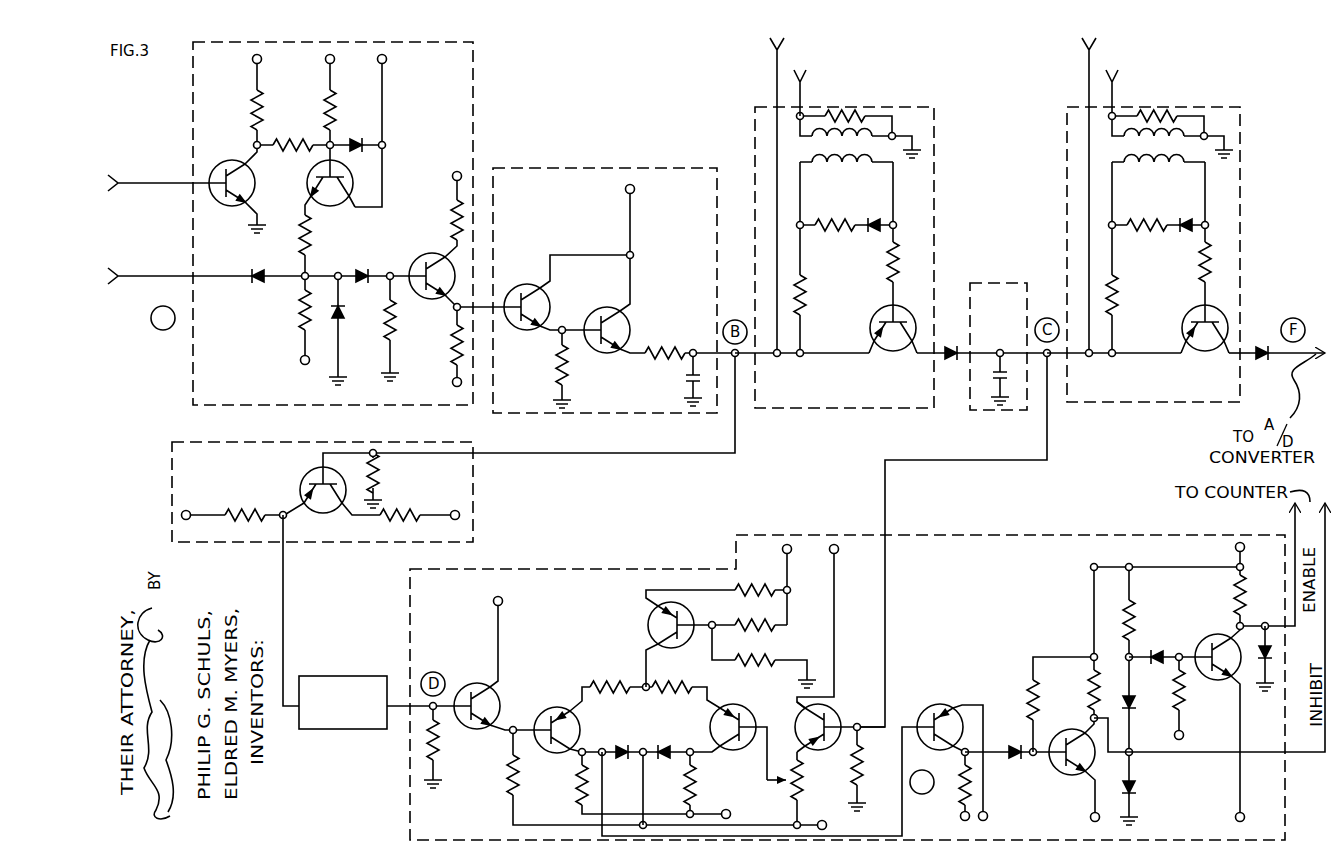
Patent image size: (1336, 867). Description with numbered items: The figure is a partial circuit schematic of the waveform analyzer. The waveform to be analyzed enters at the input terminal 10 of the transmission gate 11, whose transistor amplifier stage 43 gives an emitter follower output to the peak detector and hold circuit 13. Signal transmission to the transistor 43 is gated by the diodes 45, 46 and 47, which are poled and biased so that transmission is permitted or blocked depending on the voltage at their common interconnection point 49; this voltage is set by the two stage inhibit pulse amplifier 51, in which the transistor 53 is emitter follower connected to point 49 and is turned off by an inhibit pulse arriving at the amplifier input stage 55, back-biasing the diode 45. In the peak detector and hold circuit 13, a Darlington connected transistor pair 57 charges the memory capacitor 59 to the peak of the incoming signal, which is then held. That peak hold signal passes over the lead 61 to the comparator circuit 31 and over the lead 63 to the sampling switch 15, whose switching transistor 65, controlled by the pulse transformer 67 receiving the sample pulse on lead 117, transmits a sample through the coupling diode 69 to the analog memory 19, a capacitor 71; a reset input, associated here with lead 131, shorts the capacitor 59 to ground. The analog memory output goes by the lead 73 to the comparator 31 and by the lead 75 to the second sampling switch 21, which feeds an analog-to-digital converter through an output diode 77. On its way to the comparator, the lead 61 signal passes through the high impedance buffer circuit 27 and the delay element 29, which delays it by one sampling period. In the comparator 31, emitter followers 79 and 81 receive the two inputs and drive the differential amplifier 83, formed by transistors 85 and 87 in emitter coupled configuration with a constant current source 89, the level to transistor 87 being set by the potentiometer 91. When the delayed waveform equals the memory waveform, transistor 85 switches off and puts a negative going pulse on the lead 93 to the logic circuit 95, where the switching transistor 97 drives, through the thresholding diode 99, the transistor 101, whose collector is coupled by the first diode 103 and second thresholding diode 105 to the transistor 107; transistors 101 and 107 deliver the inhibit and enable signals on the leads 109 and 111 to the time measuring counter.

The input terminal 10 is at (116, 288).
The transmission gate 11 is at (474, 57).
The peak detector and hold circuit 13 is at (668, 167).
The sampling switch 15 is at (950, 104).
The analog memory 19 is at (970, 305).
The second sampling switch 21 is at (1253, 205).
The buffer circuit 27 is at (473, 494).
The delay element 29 is at (331, 676).
The comparator circuit 31 is at (649, 568).
The transistor amplifier stage 43 is at (430, 300).
The diode 45 is at (256, 270).
The diode 46 is at (374, 270).
The diode 47 is at (343, 318).
The common interconnection point 49 is at (300, 283).
The inhibit pulse amplifier 51 is at (330, 234).
The transistor 53 is at (332, 208).
The amplifier input stage 55 is at (248, 194).
The transistor pair 57 is at (580, 357).
The memory capacitor 59 is at (681, 378).
The lead 61 is at (738, 414).
The lead 63 is at (742, 358).
The switching transistor 65 is at (893, 352).
The pulse transformer 67 is at (846, 177).
The coupling diode 69 is at (954, 362).
The capacitor 71 is at (994, 375).
The lead 73 is at (1049, 406).
The lead 75 is at (1077, 357).
The output diode 77 is at (1268, 342).
The emitter follower 79 is at (509, 701).
The emitter follower 81 is at (841, 706).
The differential amplifier 83 is at (612, 677).
The transistor 85 is at (583, 724).
The transistor 87 is at (710, 720).
The constant current source 89 is at (642, 612).
The potentiometer 91 is at (806, 781).
The lead 93 is at (603, 775).
The logic circuit 95 is at (1055, 644).
The switching transistor 97 is at (940, 704).
The thresholding diode 99 is at (1006, 744).
The transistor 101 is at (1057, 769).
The first diode 103 is at (1140, 705).
The second thresholding diode 105 is at (1153, 648).
The transistor 107 is at (1201, 640).
The lead 109 is at (1303, 755).
The lead 111 is at (1295, 538).
The lead 117 is at (800, 102).
The reset input 131 is at (1089, 66).